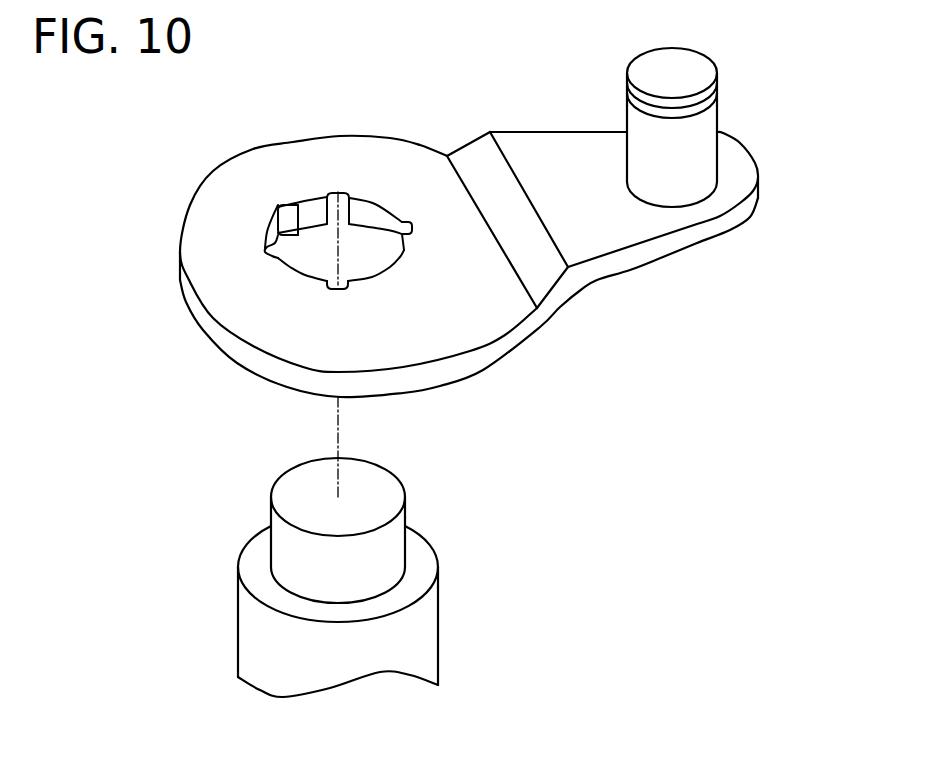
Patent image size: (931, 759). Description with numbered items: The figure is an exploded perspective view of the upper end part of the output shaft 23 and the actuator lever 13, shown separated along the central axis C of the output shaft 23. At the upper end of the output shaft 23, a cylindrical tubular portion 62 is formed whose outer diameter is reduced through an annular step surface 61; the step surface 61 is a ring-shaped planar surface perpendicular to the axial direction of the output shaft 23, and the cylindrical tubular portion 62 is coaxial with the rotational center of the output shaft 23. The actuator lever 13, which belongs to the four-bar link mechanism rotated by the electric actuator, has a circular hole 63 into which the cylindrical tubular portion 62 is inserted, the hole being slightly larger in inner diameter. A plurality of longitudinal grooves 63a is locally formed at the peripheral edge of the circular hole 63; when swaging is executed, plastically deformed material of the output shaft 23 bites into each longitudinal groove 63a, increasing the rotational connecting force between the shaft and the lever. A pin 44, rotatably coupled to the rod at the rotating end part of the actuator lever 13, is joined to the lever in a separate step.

The actuator lever 13 is at (610, 263).
The pin 44 is at (700, 133).
The circular hole 63 is at (357, 190).
The longitudinal groove 63a is at (270, 253).
The cylindrical tubular portion 62 is at (390, 541).
The annular step surface 61 is at (423, 554).
The output shaft 23 is at (258, 628).
The central axis C is at (338, 432).